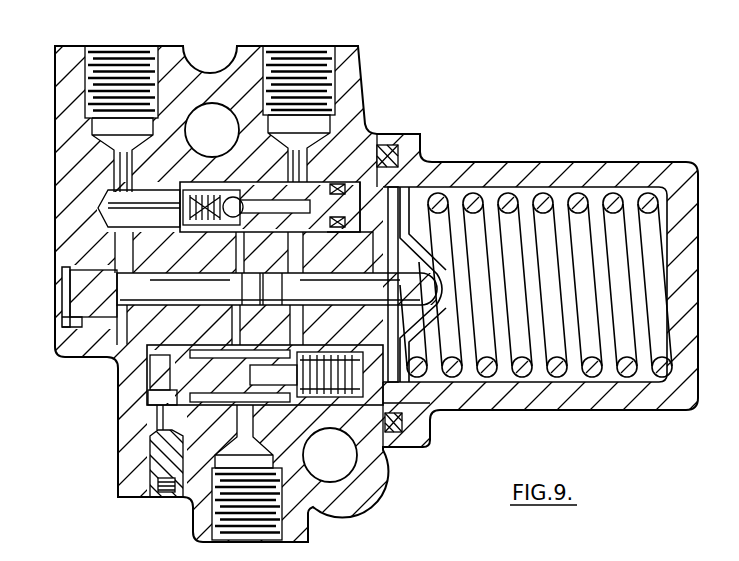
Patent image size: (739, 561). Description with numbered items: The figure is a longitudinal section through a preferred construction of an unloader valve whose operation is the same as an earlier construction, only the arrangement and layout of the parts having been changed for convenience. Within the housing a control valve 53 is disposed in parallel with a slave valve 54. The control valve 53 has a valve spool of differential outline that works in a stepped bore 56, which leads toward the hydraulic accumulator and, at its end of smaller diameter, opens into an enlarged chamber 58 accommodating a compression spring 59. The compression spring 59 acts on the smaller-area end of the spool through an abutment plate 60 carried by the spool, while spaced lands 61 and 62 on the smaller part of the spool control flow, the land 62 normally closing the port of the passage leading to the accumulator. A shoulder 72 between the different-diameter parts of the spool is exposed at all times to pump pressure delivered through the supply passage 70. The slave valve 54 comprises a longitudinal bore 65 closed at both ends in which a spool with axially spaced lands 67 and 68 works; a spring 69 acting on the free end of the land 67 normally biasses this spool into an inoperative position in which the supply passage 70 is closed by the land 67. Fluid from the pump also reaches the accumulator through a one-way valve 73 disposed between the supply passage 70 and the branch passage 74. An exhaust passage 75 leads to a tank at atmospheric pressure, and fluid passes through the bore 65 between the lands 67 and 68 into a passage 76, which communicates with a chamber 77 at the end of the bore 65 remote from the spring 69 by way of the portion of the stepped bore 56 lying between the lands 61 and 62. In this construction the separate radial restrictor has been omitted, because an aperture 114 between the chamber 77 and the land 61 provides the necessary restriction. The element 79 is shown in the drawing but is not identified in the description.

The control valve 53 is at (175, 286).
The slave valve 54 is at (152, 437).
The stepped bore 56 is at (63, 270).
The enlarged chamber 58 is at (511, 188).
The compression spring 59 is at (411, 250).
The abutment plate 60 is at (393, 225).
The land 61 is at (140, 291).
The land 62 is at (290, 292).
The longitudinal bore 65 is at (382, 438).
The land 67 is at (356, 472).
The land 68 is at (160, 462).
The spring 69 is at (391, 434).
The supply passage 70 is at (299, 118).
The shoulder 72 is at (284, 190).
The one-way valve 73 is at (224, 198).
The branch passage 74 is at (122, 165).
The exhaust passage 75 is at (287, 467).
The passage 76 is at (160, 404).
The chamber 77 is at (158, 394).
The retaining ring 79 is at (75, 321).
The aperture 114 is at (160, 350).